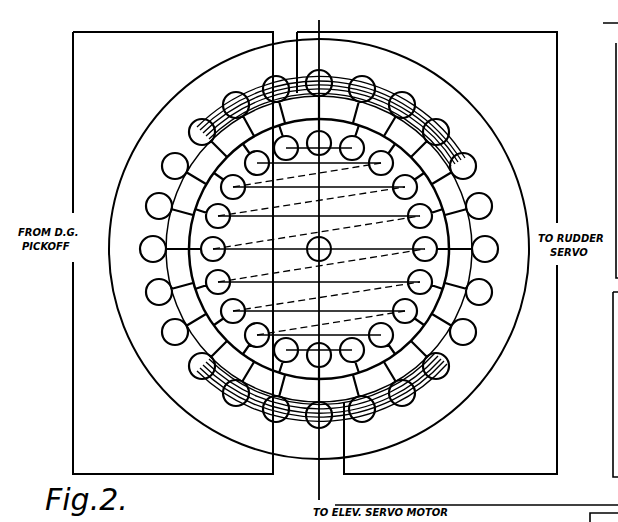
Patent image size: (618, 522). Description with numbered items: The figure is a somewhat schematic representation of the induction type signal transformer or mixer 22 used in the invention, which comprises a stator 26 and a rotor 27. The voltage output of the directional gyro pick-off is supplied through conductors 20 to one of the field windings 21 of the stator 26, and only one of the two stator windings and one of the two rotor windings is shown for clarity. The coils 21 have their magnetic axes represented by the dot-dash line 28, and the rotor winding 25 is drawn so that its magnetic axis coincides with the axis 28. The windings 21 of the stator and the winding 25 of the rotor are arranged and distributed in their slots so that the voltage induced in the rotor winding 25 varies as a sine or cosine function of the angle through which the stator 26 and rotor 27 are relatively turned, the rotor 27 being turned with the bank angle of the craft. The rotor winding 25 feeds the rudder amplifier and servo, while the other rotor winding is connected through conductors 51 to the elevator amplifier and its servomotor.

The conductors 20 is at (73, 188).
The field windings 21 is at (232, 112).
The signal transformer 22 is at (183, 411).
The rotor winding 25 is at (390, 213).
The stator 26 is at (486, 124).
The rotor 27 is at (190, 262).
The magnetic axis 28 is at (322, 58).
The conductors 51 is at (491, 521).